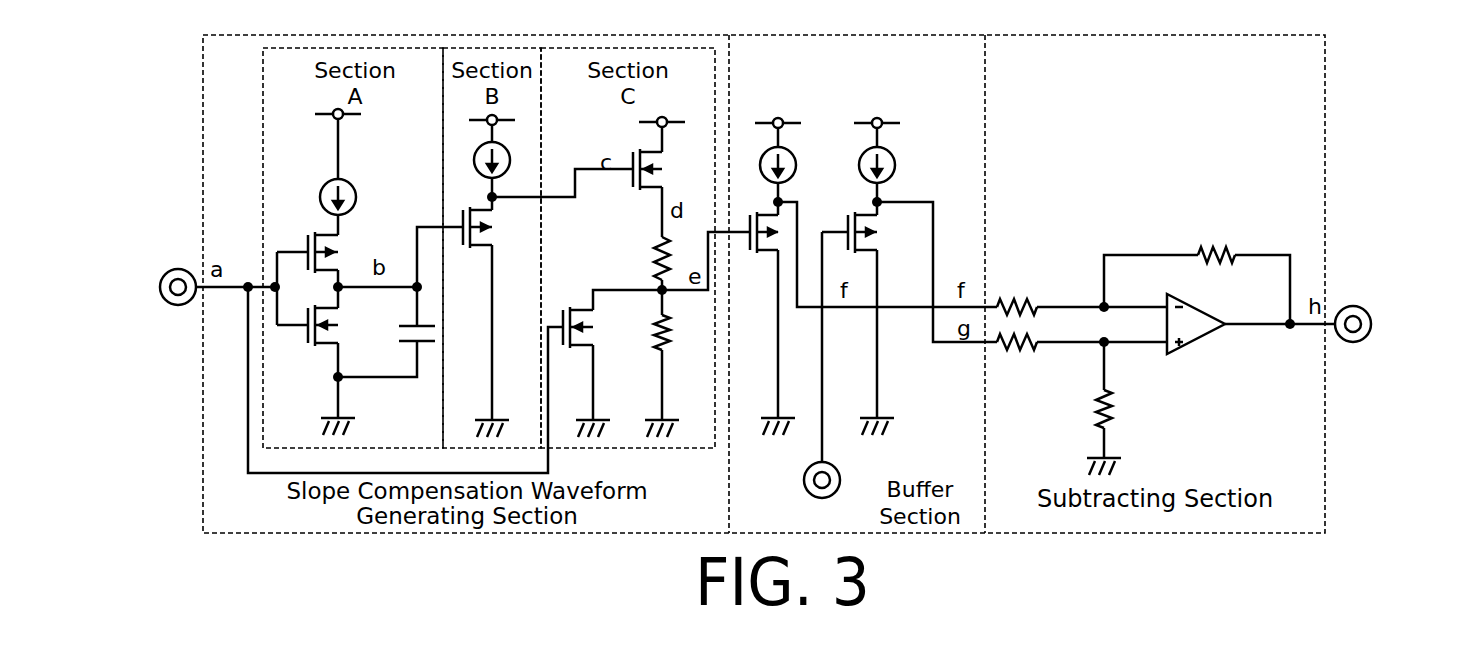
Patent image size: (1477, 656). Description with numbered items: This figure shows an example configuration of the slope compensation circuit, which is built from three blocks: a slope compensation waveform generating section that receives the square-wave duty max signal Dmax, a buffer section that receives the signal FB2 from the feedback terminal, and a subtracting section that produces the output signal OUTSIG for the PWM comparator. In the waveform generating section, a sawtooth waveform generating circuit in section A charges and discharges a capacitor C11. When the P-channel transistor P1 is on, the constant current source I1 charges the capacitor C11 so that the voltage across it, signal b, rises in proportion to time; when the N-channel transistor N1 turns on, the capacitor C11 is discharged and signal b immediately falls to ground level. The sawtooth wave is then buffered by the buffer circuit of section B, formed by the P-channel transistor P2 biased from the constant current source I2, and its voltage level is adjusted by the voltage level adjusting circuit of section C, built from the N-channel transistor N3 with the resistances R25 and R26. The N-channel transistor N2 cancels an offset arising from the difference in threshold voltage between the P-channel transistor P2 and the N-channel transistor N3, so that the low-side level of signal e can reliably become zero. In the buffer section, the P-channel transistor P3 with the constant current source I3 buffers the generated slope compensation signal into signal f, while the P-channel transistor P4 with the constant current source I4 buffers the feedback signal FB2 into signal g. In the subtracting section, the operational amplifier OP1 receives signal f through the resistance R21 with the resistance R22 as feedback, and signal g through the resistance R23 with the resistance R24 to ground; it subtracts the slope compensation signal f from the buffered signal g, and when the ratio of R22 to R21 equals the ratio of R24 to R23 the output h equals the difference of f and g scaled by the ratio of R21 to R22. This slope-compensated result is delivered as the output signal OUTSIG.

The P-channel transistor P1 is at (306, 231).
The N-channel transistor N1 is at (306, 350).
The constant current source I1 is at (358, 196).
The capacitor C11 is at (428, 350).
The P-channel transistor P2 is at (469, 248).
The constant current source I2 is at (512, 158).
The N-channel transistor N2 is at (563, 306).
The N-channel transistor N3 is at (624, 190).
The resistance R25 is at (645, 256).
The resistance R26 is at (680, 336).
The constant current source I3 is at (758, 170).
The P-channel transistor P3 is at (752, 255).
The P-channel transistor P4 is at (847, 208).
The constant current source I4 is at (897, 165).
The resistance R21 is at (1010, 288).
The resistance R22 is at (1205, 238).
The resistance R23 is at (1014, 362).
The resistance R24 is at (1120, 412).
The operational amplifier OP1 is at (1190, 350).
The signal from the feedback terminal FB2 is at (828, 498).
The duty max signal Dmax is at (148, 287).
The output signal OUTSIG is at (1402, 324).